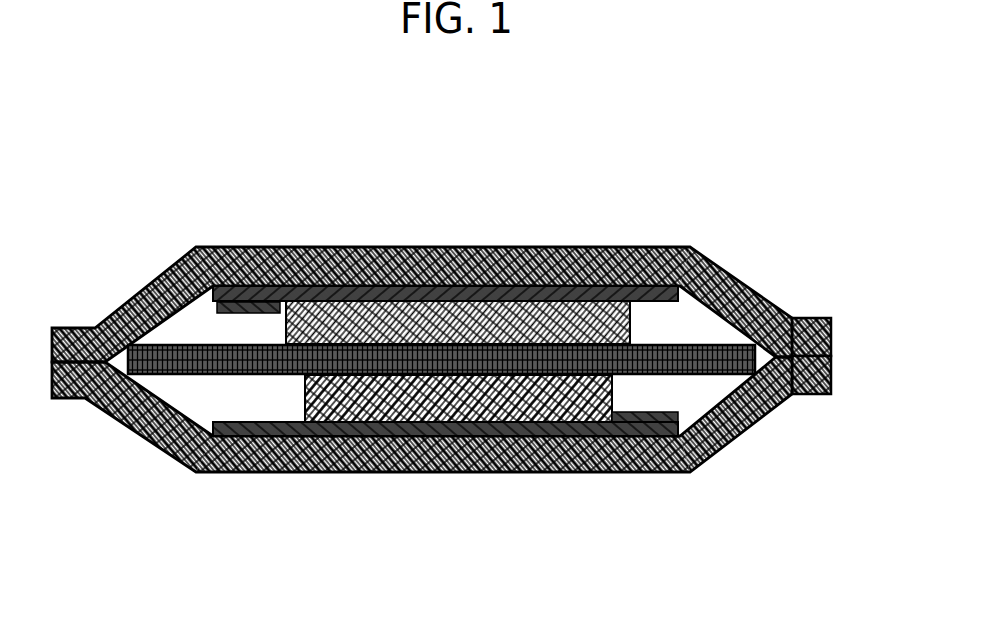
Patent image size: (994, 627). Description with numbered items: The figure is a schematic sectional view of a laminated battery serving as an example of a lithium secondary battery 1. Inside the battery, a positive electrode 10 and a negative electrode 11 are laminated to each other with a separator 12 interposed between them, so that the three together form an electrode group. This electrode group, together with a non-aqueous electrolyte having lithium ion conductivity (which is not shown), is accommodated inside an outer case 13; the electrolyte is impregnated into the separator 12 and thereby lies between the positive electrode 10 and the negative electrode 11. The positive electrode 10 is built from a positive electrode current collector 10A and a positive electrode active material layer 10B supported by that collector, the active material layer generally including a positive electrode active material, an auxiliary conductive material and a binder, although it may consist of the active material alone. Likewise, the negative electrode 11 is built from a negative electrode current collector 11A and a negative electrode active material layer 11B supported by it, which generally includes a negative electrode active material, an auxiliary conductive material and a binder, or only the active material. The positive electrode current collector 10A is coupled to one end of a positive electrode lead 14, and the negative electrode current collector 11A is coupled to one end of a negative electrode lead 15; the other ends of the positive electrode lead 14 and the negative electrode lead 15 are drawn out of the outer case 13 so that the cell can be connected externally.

The lithium secondary battery 1 is at (476, 332).
The positive electrode 10 is at (556, 448).
The positive electrode current collector 10A is at (358, 436).
The positive electrode active material layer 10B is at (457, 436).
The negative electrode 11 is at (556, 270).
The negative electrode current collector 11A is at (431, 286).
The negative electrode active material layer 11B is at (574, 286).
The separator 12 is at (178, 365).
The outer case 13 is at (132, 300).
The positive electrode lead 14 is at (690, 472).
The negative electrode lead 15 is at (203, 248).